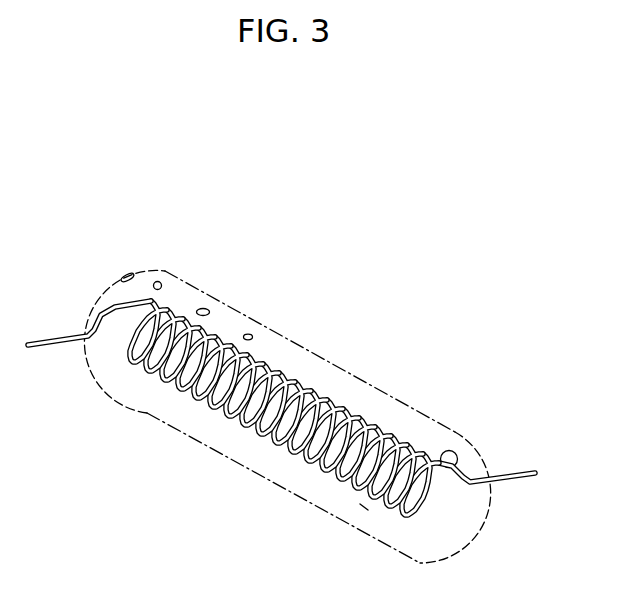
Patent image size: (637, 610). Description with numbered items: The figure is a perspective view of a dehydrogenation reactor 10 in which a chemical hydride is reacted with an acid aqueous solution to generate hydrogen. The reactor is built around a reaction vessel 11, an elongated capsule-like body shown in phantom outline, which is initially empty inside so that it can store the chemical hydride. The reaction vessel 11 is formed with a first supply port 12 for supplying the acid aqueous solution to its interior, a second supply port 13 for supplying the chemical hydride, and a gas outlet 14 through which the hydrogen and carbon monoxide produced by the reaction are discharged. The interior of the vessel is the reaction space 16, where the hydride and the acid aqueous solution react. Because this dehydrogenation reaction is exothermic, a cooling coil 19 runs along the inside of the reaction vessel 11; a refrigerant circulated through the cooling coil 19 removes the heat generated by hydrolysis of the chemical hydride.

The dehydrogenation reactor 10 is at (402, 282).
The reaction vessel 11 is at (142, 413).
The first supply port 12 is at (251, 334).
The second supply port 13 is at (124, 274).
The gas outlet 14 is at (205, 309).
The reaction space 16 is at (360, 504).
The cooling coil 19 is at (264, 434).